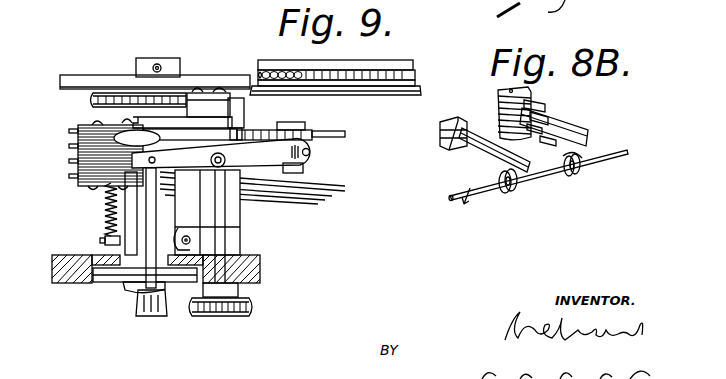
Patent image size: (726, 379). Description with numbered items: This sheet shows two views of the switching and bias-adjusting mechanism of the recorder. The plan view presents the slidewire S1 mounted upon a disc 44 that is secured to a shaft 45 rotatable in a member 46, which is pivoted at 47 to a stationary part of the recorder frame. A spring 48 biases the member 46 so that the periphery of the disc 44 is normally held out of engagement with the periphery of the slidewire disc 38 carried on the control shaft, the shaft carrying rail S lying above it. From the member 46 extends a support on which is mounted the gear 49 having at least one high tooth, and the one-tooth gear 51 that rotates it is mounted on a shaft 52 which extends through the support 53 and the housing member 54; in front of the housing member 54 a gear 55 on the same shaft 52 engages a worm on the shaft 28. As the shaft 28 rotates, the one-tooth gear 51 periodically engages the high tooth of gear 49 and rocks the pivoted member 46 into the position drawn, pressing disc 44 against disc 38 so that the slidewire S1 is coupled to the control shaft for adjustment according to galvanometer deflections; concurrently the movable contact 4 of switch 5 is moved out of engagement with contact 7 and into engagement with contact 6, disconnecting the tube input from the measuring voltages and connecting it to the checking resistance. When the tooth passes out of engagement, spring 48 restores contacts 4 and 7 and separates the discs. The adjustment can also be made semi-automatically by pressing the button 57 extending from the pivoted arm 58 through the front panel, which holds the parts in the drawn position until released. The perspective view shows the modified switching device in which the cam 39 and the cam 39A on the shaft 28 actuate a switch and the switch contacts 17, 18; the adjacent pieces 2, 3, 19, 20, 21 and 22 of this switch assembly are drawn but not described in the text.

In FIG. 9, the shaft 45 is at (160, 58).
In FIG. 9, the disc 44 is at (237, 88).
In FIG. 9, the rail S is at (290, 70).
In FIG. 9, the slidewire S1 is at (91, 100).
In FIG. 9, the slidewire disc 38 is at (272, 93).
In FIG. 9, the one-tooth gear 51 is at (236, 128).
In FIG. 9, the gear 49 is at (322, 120).
In FIG. 9, the switch 5 is at (262, 188).
In FIG. 9, the contact 7 is at (320, 176).
In FIG. 9, the movable contact 4 is at (318, 190).
In FIG. 9, the contact 6 is at (301, 198).
In FIG. 9, the pivoted arm 58 is at (206, 182).
In FIG. 9, the support 53 is at (236, 220).
In FIG. 9, the shaft 52 is at (250, 256).
In FIG. 9, the housing member 54 is at (257, 284).
In FIG. 9, the gear 55 is at (252, 313).
In FIG. 9, the pivot 47 is at (187, 236).
In FIG. 9, the member 46 is at (108, 223).
In FIG. 9, the spring 48 is at (128, 212).
In FIG. 9, the button 57 is at (155, 318).
In FIG. 8B, the shaft 28 is at (620, 160).
In FIG. 8B, the cam 39 is at (509, 193).
In FIG. 8B, the cam 39A is at (573, 178).
In FIG. 8B, the block 3 is at (450, 148).
In FIG. 8B, the bar 2 is at (470, 158).
In FIG. 8B, the laminated block 20 is at (498, 137).
In FIG. 8B, the switch contact 17 is at (572, 121).
In FIG. 8B, the pin 19 is at (545, 108).
In FIG. 8B, the pin 21 is at (549, 120).
In FIG. 8B, the pin 22 is at (536, 142).
In FIG. 8B, the switch contact 18 is at (563, 148).